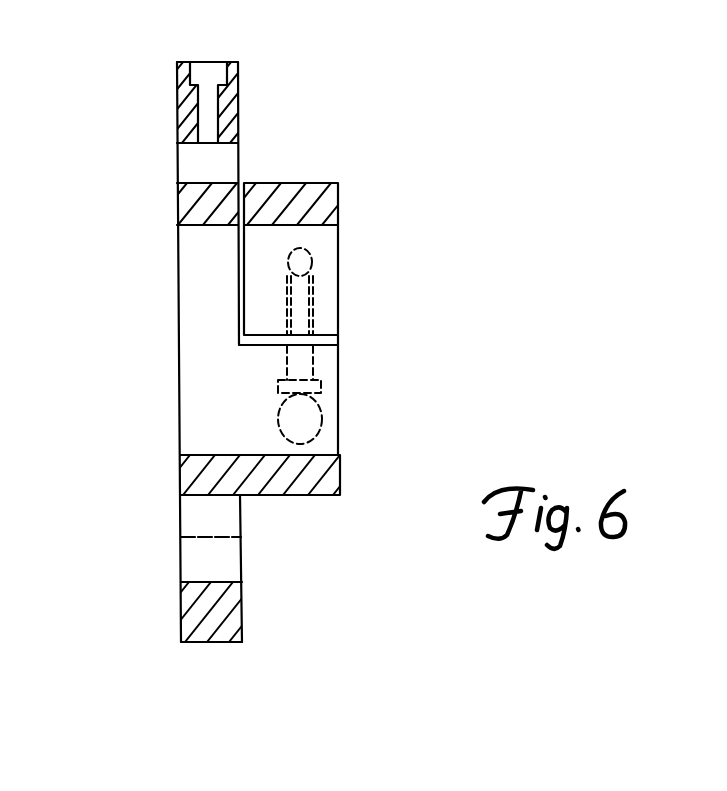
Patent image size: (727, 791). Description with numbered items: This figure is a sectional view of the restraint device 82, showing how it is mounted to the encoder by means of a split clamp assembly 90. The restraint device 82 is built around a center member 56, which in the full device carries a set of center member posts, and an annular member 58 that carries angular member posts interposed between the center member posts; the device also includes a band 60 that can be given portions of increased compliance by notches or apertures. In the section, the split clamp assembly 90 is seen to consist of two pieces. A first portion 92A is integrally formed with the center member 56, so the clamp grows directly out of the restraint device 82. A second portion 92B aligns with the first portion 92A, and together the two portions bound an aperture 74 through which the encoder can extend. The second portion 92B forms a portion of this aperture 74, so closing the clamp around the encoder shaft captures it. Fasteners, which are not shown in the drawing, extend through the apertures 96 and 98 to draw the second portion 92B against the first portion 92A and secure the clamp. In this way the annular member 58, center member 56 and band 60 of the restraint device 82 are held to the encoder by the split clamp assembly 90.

The restraint device 82 is at (150, 70).
The annular member 58 is at (178, 118).
The center member 56 is at (177, 207).
The band 60 is at (178, 538).
The split clamp assembly 90 is at (361, 103).
The first portion 92A is at (338, 393).
The second portion 92B is at (338, 200).
The aperture 98 is at (314, 290).
The aperture 96 is at (312, 367).
The aperture 74 is at (316, 452).